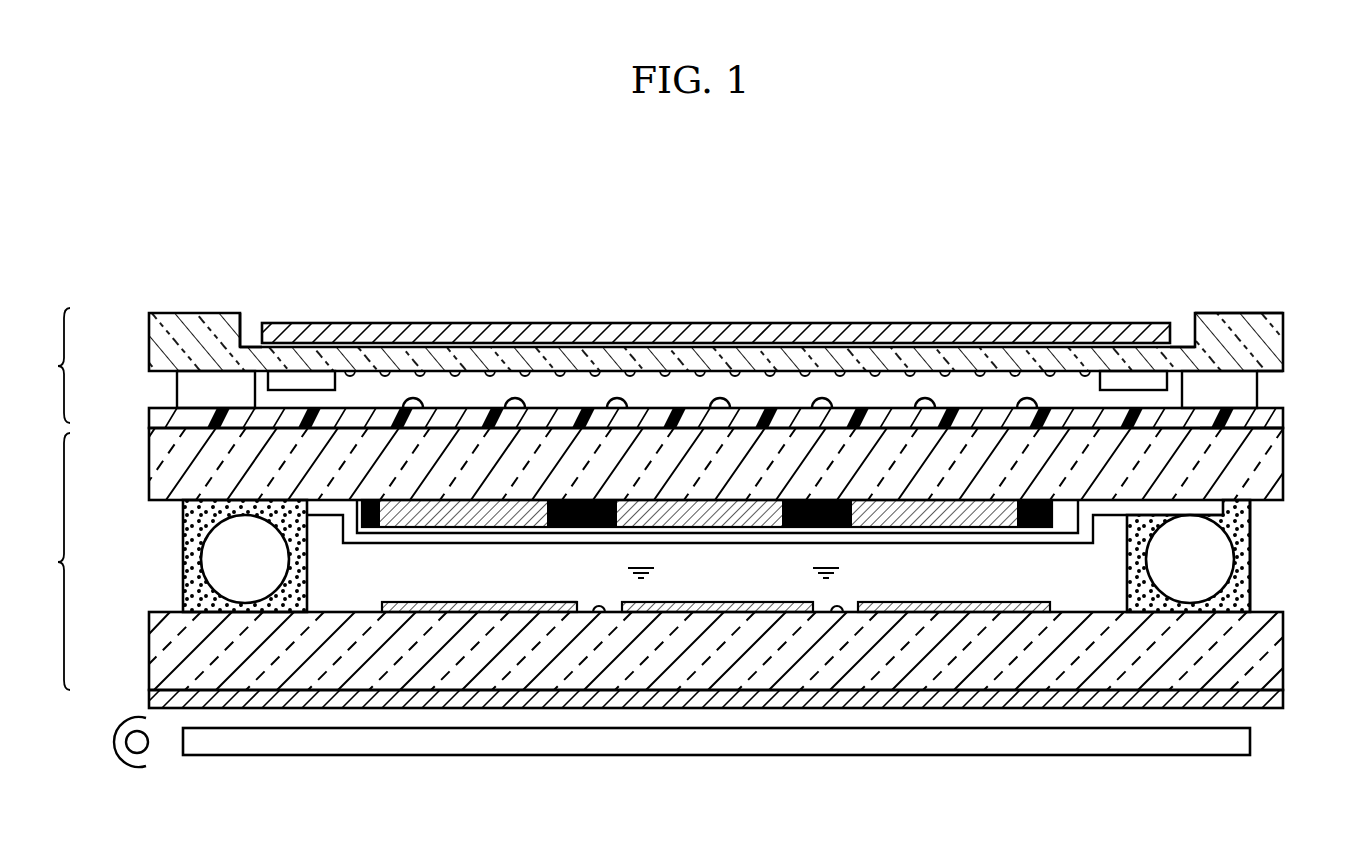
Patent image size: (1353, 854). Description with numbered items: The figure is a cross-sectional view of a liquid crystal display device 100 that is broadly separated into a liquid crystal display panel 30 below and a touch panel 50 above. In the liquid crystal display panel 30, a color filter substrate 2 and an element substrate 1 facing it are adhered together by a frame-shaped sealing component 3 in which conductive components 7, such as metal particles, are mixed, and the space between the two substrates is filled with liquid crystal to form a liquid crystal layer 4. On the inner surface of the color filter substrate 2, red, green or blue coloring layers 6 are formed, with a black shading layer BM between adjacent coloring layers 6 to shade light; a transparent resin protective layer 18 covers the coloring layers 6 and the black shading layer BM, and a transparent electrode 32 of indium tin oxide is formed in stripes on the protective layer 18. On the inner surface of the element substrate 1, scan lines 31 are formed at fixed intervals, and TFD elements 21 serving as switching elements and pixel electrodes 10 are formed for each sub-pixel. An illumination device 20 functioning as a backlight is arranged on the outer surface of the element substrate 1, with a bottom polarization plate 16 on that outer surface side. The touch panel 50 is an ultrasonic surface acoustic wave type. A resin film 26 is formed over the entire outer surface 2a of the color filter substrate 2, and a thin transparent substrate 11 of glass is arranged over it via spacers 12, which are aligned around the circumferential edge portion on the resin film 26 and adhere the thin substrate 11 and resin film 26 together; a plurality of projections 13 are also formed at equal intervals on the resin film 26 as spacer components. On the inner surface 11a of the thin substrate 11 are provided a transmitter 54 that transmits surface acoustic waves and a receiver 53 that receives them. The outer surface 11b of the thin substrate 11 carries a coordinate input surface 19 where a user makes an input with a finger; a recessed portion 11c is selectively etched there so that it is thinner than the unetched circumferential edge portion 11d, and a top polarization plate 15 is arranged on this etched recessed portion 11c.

The liquid crystal display device 100 is at (613, 278).
The touch panel 50 is at (47, 365).
The liquid crystal display panel 30 is at (47, 561).
The thin substrate 11 is at (149, 332).
The inner surface 11a is at (1275, 374).
The outer surface 11b is at (253, 347).
The recessed portion 11c is at (1184, 338).
The circumferential edge portion 11d is at (1243, 313).
The coordinate input surface 19 is at (244, 306).
The top polarization plate 15 is at (945, 323).
The transmitter 54 is at (298, 378).
The receiver 53 is at (1133, 378).
The spacers 12 is at (177, 392).
The projections 13 is at (715, 398).
The resin film 26 is at (149, 418).
The color filter substrate 2 is at (149, 458).
The outer surface 2a is at (1275, 424).
The sealing component 3 is at (1255, 520).
The conductive components 7 is at (1215, 553).
The transparent electrode 32 is at (1045, 543).
The protective layer 18 is at (1065, 533).
The coloring layer 6 is at (693, 527).
The black shading layer BM is at (826, 528).
The liquid crystal layer 4 is at (763, 585).
The pixel electrodes 10 is at (503, 602).
The TFD elements 21 is at (560, 602).
The scan lines 31 is at (598, 605).
The element substrate 1 is at (149, 645).
The bottom polarization plate 16 is at (1273, 697).
The illumination device 20 is at (838, 755).